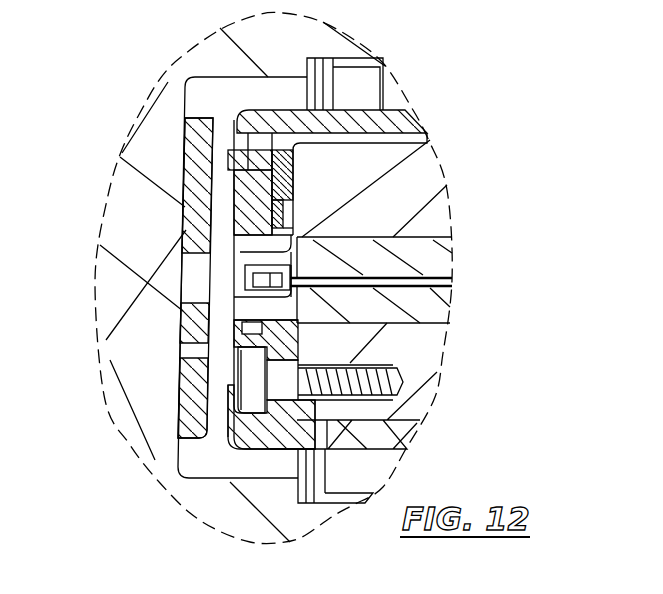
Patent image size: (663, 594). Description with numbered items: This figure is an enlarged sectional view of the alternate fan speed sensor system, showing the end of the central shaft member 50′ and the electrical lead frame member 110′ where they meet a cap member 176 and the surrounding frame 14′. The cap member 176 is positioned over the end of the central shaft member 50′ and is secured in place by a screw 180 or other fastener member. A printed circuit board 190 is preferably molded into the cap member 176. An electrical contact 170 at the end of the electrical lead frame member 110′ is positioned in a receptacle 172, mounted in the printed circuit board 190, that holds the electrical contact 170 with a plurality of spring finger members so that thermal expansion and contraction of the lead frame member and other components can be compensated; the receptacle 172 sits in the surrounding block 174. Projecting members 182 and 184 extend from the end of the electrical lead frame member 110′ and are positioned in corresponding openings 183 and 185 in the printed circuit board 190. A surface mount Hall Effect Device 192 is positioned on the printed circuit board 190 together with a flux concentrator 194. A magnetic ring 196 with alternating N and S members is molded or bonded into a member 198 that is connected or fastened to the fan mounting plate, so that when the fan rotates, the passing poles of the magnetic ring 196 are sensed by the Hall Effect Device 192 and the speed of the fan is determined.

The bracket frame 14′ is at (157, 453).
The central shaft member 50′ is at (417, 163).
The electrical lead frame member 110′ is at (469, 198).
The electrical contact 170 is at (279, 287).
The receptacle 172 is at (252, 250).
The mounting block 174 is at (405, 303).
The cap member 176 is at (260, 117).
The screw 180 is at (250, 390).
The projecting member 182 is at (235, 251).
The opening 183 is at (237, 250).
The projecting member 184 is at (242, 312).
The opening 185 is at (245, 328).
The printed circuit board 190 is at (255, 202).
The surface mount Hall Effect Device 192 is at (302, 151).
The flux concentrator 194 is at (227, 157).
The magnetic ring 196 is at (237, 248).
The member 198 is at (195, 173).